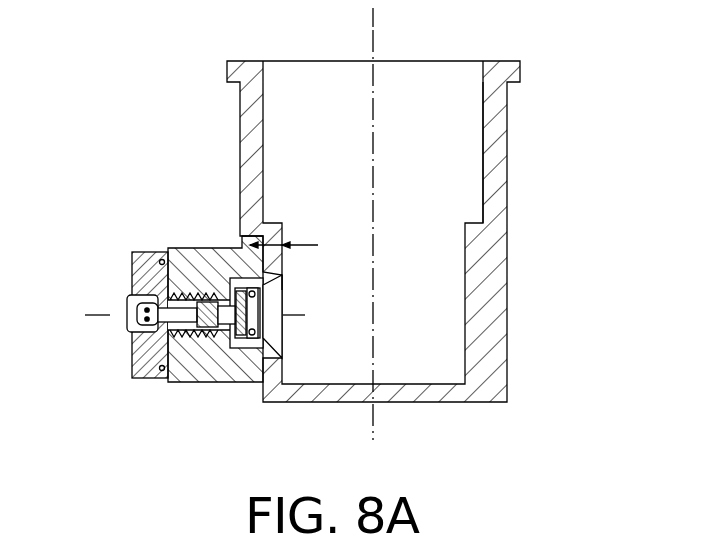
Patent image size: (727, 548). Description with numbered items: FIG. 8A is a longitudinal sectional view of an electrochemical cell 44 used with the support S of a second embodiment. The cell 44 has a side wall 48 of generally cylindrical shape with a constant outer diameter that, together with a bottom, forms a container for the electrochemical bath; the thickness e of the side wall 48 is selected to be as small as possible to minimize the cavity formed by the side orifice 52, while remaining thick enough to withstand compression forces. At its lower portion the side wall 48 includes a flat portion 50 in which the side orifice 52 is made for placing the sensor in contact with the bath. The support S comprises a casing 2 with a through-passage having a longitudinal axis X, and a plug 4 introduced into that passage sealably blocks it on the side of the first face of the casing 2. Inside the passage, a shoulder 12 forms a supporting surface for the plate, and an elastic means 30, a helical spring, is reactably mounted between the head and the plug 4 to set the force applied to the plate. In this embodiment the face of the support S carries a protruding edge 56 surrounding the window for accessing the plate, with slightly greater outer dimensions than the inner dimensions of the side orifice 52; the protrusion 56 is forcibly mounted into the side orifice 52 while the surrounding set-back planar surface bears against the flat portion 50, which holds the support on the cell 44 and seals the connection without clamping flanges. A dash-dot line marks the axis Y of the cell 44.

The casing 2 is at (183, 240).
The plug 4 is at (120, 275).
The shoulder 12 is at (245, 350).
The elastic means 30 is at (180, 352).
The cell 44 is at (548, 147).
The side wall 48 is at (495, 297).
The flat portion 50 is at (265, 352).
The side orifice 52 is at (286, 355).
The protruding edge 56 is at (284, 274).
The support S is at (120, 217).
The longitudinal axis X is at (95, 317).
The container axis Y is at (378, 20).
The thickness e is at (284, 238).